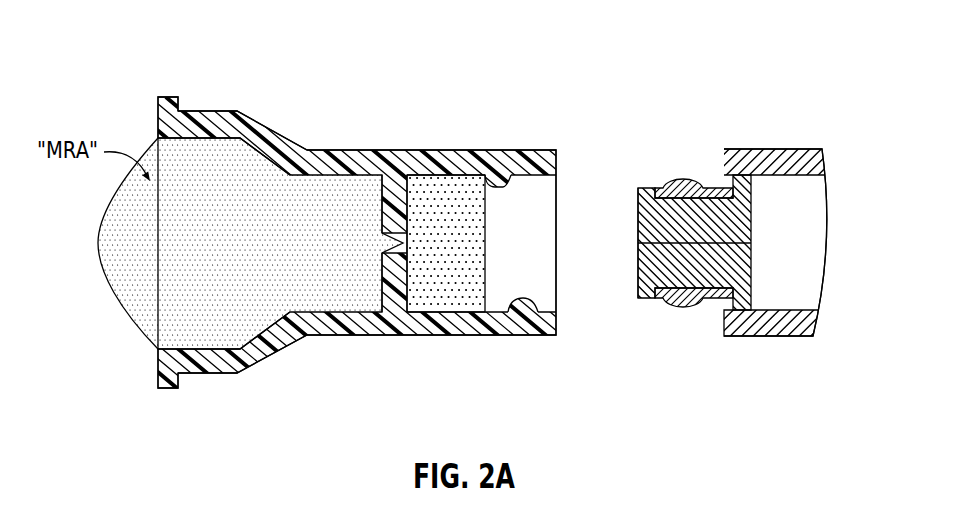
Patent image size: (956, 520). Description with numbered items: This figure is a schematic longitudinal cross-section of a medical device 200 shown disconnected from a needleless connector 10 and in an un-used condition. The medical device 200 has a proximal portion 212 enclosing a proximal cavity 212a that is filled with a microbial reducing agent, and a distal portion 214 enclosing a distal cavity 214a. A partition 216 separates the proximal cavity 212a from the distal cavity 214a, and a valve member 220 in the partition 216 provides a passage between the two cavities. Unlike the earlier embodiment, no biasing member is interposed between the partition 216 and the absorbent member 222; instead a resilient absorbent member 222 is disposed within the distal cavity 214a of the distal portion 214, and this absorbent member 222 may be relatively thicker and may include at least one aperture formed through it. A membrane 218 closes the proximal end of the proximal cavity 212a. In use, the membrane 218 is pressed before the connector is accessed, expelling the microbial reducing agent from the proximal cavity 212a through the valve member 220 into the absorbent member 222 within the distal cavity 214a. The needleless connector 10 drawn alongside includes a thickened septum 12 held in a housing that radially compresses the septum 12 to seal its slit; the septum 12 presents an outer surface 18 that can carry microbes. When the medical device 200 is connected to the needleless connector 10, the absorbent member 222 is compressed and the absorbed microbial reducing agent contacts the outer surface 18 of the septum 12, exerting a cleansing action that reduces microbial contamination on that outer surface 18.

The medical device 200 is at (399, 72).
The proximal portion 212 is at (288, 128).
The proximal cavity 212a is at (193, 137).
The distal portion 214 is at (520, 148).
The distal cavity 214a is at (478, 175).
The partition 216 is at (391, 192).
The valve member 220 is at (396, 252).
The absorbent member 222 is at (446, 192).
The membrane 218 is at (120, 302).
The needleless connector 10 is at (796, 128).
The septum 12 is at (758, 217).
The outer surface 18 is at (638, 212).